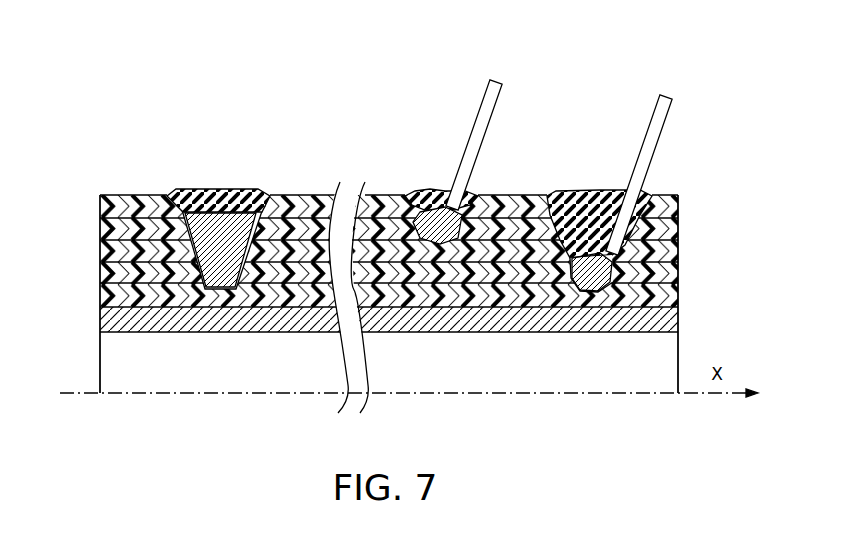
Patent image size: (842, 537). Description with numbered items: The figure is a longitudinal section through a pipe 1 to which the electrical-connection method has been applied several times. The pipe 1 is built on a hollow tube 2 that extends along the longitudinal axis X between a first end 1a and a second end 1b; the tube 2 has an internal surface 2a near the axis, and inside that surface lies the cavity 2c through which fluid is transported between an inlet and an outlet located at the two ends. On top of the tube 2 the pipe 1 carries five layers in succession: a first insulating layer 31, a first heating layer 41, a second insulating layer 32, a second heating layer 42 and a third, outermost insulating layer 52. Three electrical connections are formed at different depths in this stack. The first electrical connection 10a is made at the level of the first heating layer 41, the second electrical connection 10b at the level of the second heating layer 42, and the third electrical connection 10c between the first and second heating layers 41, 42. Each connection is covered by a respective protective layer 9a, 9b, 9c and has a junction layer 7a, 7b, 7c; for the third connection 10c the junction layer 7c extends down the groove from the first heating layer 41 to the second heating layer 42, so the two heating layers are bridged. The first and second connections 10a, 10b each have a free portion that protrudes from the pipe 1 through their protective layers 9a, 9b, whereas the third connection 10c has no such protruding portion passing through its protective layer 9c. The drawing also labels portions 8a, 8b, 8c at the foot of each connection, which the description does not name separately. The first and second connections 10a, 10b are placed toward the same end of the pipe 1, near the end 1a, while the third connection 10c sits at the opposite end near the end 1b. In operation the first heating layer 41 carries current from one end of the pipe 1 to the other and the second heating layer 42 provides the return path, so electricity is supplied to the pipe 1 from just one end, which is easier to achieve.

The pipe 1 is at (720, 147).
The first end 1a is at (693, 263).
The second end 1b is at (85, 337).
The hollow tube 2 is at (103, 320).
The internal surface 2a is at (165, 331).
The cavity 2c is at (278, 367).
The first insulating layer 31 is at (108, 294).
The second insulating layer 32 is at (108, 249).
The first heating layer 41 is at (108, 272).
The second heating layer 42 is at (110, 222).
The third insulating layer 52 is at (132, 194).
The junction layer 7a is at (572, 258).
The junction layer 7b is at (400, 203).
The junction layer 7c is at (195, 204).
The first filler portion 8a is at (596, 290).
The second filler portion 8b is at (472, 208).
The hole filler portion 8c is at (272, 207).
The protective layer 9a is at (587, 200).
The protective layer 9b is at (430, 200).
The protective layer 9c is at (226, 198).
The first electrical connection 10a is at (597, 108).
The second electrical connection 10b is at (441, 107).
The third electrical connection 10c is at (222, 105).